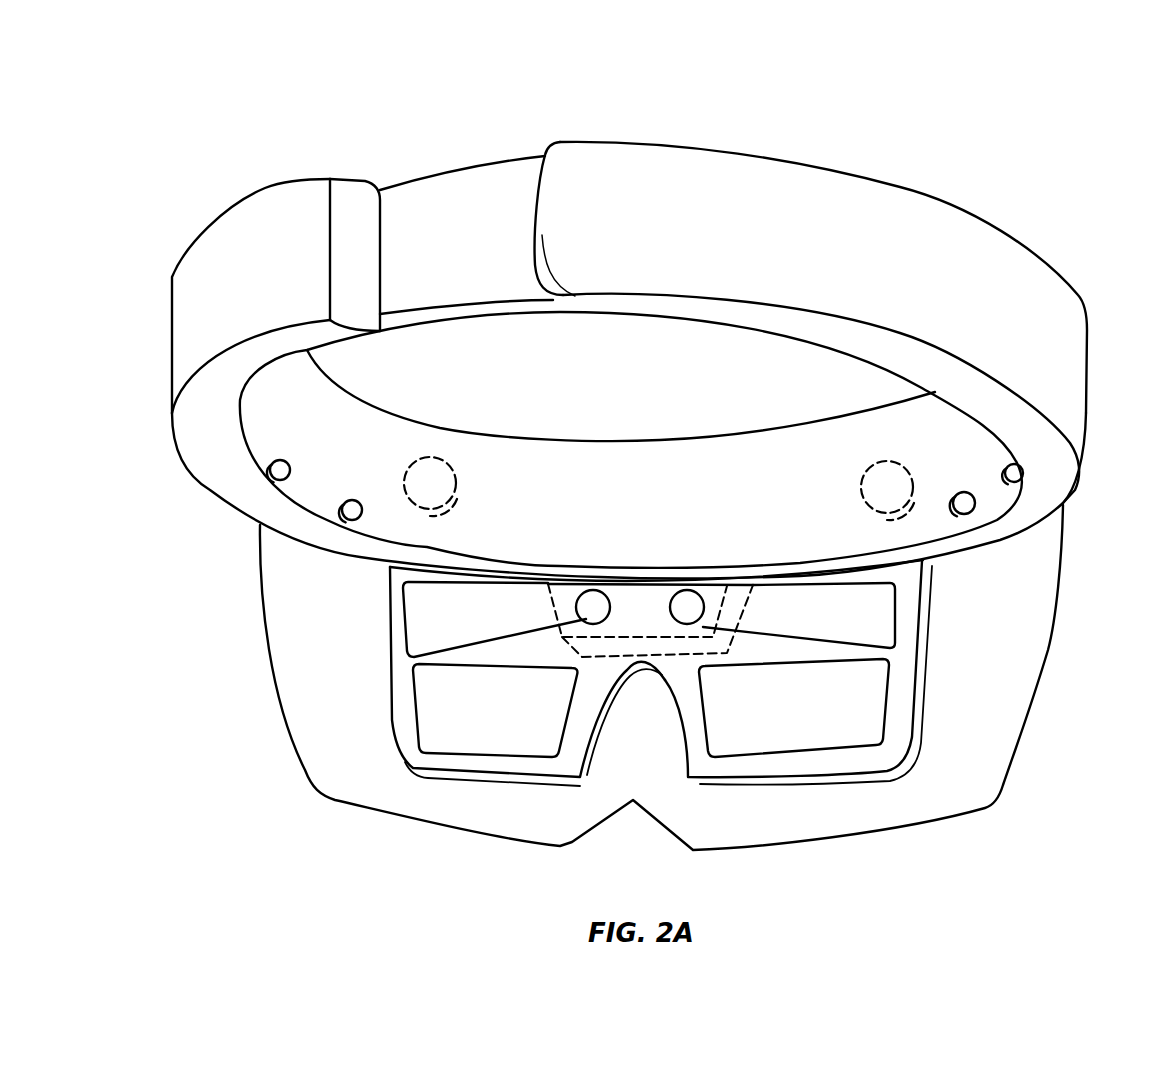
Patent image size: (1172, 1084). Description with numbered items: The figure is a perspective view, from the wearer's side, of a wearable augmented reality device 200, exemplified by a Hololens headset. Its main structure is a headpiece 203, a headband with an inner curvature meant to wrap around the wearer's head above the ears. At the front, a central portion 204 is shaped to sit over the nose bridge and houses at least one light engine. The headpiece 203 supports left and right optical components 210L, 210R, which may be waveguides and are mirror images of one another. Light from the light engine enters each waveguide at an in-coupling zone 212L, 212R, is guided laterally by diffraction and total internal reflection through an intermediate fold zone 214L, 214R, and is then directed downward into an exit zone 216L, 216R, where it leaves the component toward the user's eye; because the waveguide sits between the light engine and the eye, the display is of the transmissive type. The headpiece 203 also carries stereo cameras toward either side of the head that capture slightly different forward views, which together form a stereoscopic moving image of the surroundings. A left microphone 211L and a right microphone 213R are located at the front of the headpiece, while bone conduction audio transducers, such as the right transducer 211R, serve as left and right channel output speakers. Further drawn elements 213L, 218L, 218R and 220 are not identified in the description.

The wearable AR device 200 is at (1062, 96).
The headpiece 203 is at (726, 190).
The central portion 204 is at (634, 608).
The left optical component 210L is at (488, 775).
The right optical component 210R is at (787, 780).
The left microphone 211L is at (272, 474).
The bone conduction audio transducer 211R is at (1023, 473).
The in-coupling zone 212L is at (595, 605).
The in-coupling zone 212R is at (690, 600).
The left sensor 213L is at (343, 508).
The right microphone 213R is at (975, 504).
The intermediate (fold) zone 214L is at (400, 610).
The intermediate (fold) zone 214R is at (897, 612).
The exit zone 216L is at (407, 700).
The exit zone 216R is at (888, 697).
The left speaker 218L is at (457, 475).
The right speaker 218R is at (862, 472).
The front housing 220 is at (1033, 718).